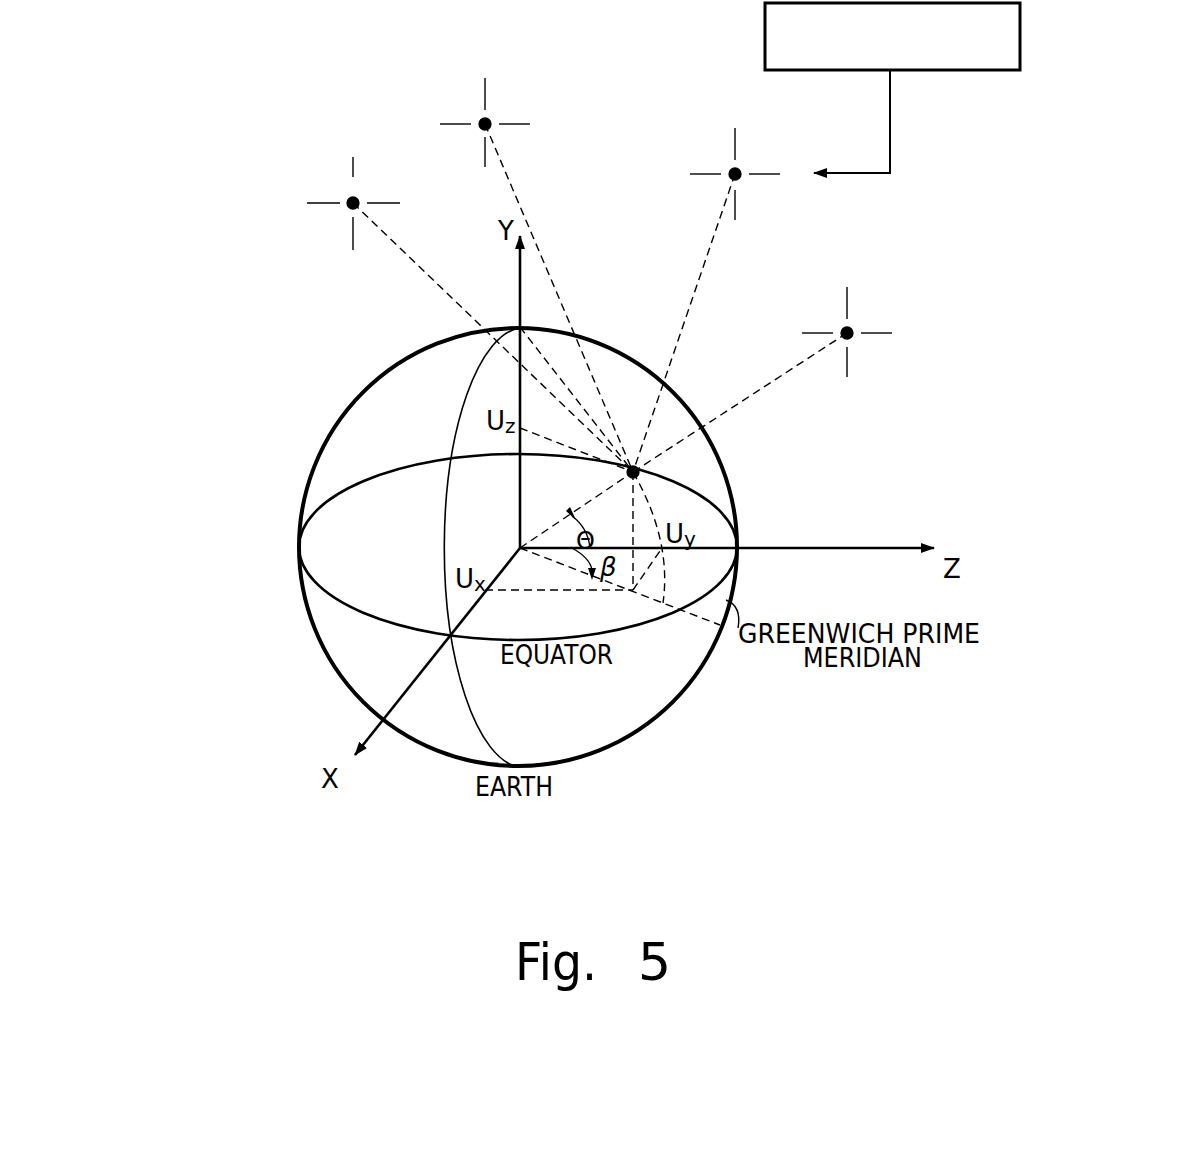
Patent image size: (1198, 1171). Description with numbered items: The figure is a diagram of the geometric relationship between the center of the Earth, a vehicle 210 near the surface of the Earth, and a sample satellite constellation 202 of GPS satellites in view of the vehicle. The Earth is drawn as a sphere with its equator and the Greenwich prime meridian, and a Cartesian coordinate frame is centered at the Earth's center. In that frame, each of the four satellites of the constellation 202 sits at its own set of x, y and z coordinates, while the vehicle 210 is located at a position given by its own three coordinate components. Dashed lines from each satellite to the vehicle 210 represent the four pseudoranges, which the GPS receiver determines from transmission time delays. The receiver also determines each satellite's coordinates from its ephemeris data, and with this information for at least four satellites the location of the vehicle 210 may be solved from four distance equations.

The satellite constellation 202 is at (620, 56).
The vehicle 210 is at (640, 476).